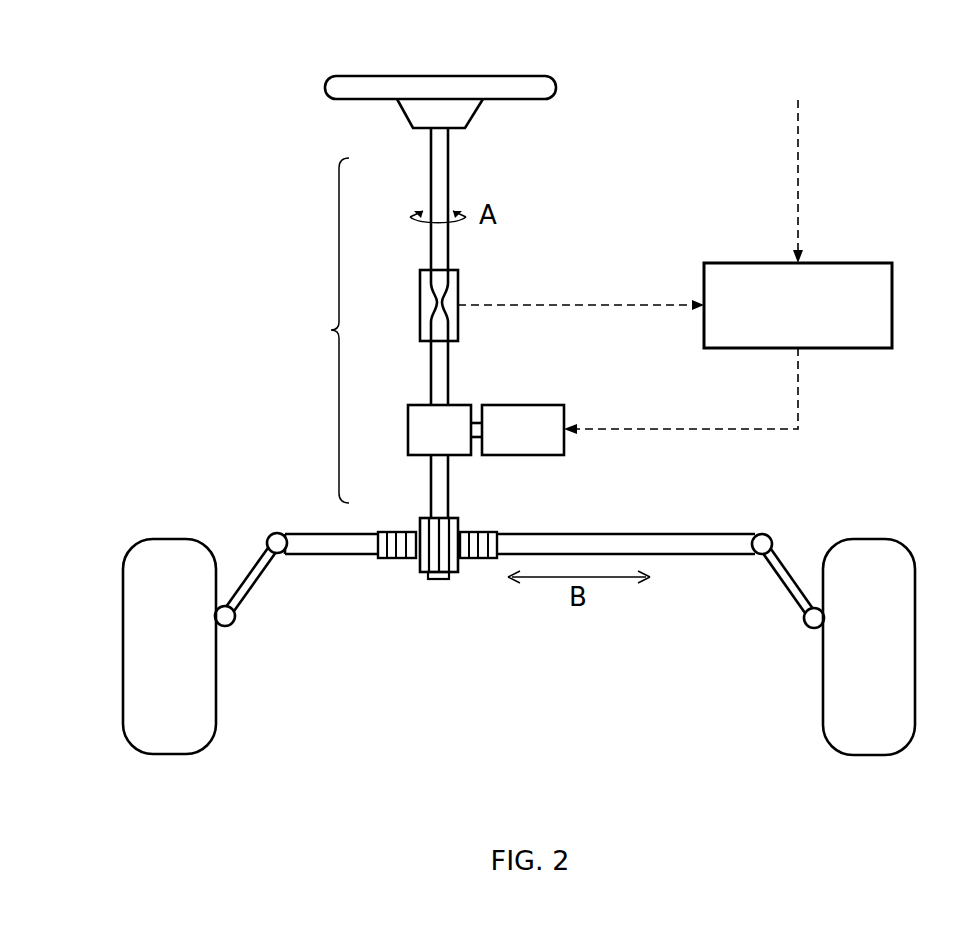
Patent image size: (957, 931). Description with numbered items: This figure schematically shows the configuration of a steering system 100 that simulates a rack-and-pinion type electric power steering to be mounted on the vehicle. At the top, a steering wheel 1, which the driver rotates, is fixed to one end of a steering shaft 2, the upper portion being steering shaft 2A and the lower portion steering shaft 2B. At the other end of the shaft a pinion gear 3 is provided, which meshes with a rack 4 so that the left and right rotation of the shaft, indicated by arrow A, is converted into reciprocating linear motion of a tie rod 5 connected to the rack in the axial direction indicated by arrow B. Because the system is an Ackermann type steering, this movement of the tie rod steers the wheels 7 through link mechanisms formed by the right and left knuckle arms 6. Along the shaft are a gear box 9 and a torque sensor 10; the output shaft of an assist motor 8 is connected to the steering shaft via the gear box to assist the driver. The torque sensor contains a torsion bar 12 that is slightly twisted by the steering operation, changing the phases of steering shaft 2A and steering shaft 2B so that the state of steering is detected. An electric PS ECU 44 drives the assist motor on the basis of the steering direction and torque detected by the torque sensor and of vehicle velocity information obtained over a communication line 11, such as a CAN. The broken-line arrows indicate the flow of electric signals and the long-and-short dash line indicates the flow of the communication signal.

The steering system 100 is at (631, 51).
The steering wheel 1 is at (440, 76).
The steering shaft 2 is at (378, 323).
The steering shaft 2A is at (437, 176).
The steering shaft 2B is at (437, 482).
The pinion gear 3 is at (450, 573).
The rack 4 is at (488, 533).
The tie rod 5 is at (652, 533).
The knuckle arm 6 is at (258, 553).
The wheels 7 is at (172, 539).
The assist motor 8 is at (522, 405).
The gear box 9 is at (459, 405).
The torque sensor 10 is at (467, 301).
The communication line 11 is at (801, 175).
The torsion bar 12 is at (441, 303).
The electric PS ECU 44 is at (892, 306).